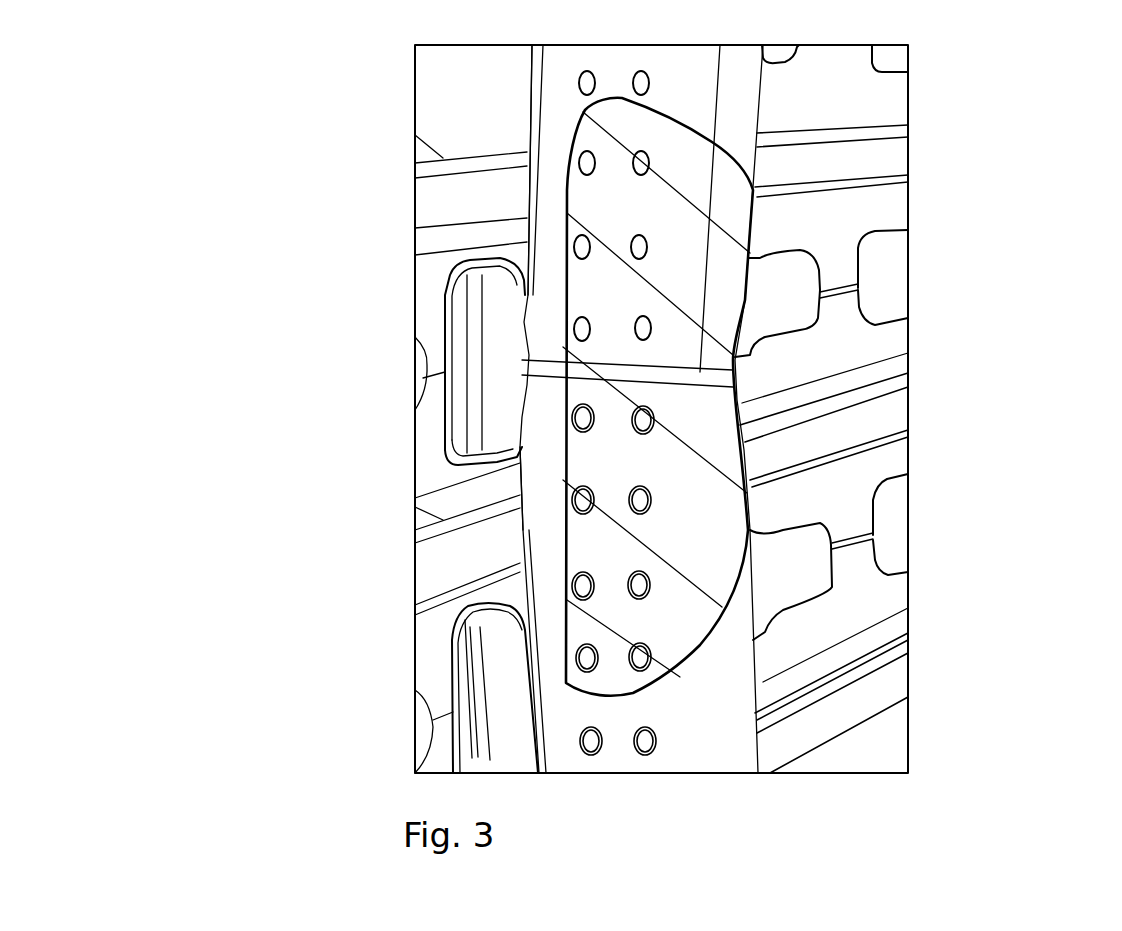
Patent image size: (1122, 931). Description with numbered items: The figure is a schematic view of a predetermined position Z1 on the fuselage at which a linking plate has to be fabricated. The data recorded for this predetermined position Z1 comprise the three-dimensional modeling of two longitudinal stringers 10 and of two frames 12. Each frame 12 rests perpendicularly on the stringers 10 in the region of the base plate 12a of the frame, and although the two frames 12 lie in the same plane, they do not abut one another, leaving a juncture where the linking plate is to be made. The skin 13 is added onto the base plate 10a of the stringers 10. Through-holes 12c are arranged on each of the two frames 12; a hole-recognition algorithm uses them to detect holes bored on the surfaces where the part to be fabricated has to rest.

The longitudinal stringer 10 is at (889, 158).
The base plate of the stringer 10a is at (887, 95).
The frame 12 is at (691, 746).
The base plate of the frame 12a is at (553, 117).
The through-hole 12c is at (578, 246).
The skin 13 is at (896, 272).
The predetermined position Z1 is at (563, 311).